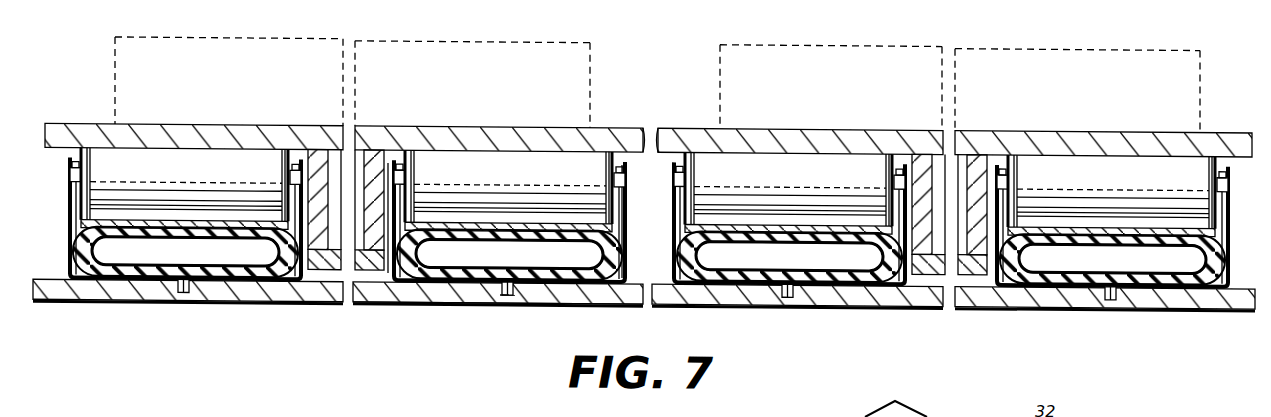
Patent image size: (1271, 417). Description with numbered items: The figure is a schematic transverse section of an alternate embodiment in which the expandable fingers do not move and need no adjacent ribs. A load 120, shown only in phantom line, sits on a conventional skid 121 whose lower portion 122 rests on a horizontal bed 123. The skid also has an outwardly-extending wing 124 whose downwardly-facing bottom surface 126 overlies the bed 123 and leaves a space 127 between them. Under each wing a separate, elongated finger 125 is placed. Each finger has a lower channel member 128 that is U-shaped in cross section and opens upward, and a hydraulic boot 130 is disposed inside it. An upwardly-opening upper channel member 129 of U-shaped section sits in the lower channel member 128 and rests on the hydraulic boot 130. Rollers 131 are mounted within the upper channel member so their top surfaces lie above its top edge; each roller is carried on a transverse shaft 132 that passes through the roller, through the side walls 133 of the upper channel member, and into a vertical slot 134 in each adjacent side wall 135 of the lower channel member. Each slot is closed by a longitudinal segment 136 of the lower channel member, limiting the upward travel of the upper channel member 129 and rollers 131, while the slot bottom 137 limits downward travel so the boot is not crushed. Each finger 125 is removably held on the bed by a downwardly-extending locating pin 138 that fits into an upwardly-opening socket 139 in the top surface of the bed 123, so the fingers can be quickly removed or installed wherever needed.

The load 120 is at (720, 75).
The skid 121 is at (580, 122).
The lower portion 122 is at (355, 290).
The horizontal bed 123 is at (413, 294).
The outwardly-extending wing 124 is at (88, 123).
The finger 125 is at (632, 297).
The bottom surface 126 is at (649, 122).
The space 127 is at (660, 267).
The lower channel member 128 is at (630, 247).
The upper channel member 129 is at (424, 215).
The hydraulic boot 130 is at (443, 243).
The rollers 131 is at (626, 157).
The transverse shaft 132 is at (628, 178).
The side walls 133 is at (398, 187).
The vertical slot 134 is at (397, 207).
The side wall 135 is at (380, 226).
The longitudinal segment 136 is at (366, 166).
The slot bottom 137 is at (628, 207).
The locating pin 138 is at (518, 289).
The socket 139 is at (503, 289).